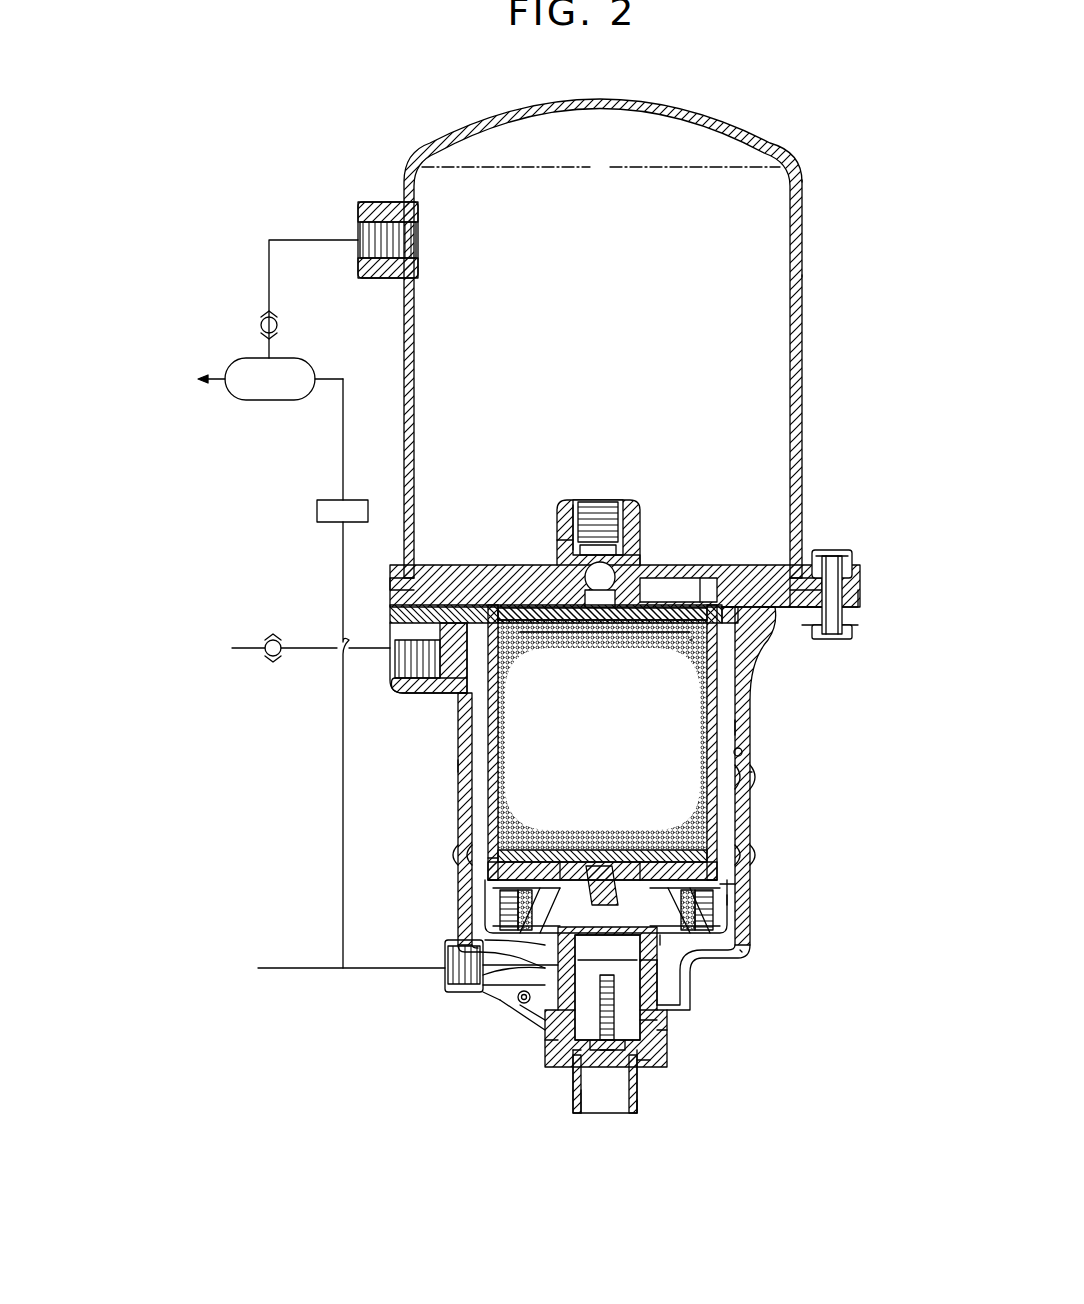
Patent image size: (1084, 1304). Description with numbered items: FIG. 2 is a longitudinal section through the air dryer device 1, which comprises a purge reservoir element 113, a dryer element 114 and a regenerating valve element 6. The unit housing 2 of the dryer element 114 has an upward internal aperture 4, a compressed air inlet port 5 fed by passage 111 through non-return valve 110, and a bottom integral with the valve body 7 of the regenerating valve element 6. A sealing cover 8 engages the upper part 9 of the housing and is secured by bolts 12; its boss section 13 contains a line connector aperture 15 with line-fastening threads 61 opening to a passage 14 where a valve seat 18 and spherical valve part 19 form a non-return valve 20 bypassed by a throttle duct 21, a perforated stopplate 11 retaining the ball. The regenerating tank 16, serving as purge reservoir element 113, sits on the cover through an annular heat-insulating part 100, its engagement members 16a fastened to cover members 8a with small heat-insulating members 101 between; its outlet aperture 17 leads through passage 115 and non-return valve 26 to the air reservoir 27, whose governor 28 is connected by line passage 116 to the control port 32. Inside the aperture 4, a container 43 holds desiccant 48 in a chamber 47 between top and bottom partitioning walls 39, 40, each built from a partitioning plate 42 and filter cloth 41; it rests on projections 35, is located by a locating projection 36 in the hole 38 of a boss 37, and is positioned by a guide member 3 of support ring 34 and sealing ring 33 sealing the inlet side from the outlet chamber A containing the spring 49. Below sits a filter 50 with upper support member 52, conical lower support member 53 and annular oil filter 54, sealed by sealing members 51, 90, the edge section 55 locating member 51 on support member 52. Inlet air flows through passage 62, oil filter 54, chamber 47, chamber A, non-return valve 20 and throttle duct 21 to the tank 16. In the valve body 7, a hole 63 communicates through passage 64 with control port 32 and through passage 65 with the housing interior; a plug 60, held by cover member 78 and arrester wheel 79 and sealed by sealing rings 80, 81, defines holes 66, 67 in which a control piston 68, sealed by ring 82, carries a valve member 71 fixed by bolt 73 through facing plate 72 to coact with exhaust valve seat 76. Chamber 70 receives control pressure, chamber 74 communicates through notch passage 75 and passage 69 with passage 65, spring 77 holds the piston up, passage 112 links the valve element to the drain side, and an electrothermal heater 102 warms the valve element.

The air dryer device 1 is at (830, 136).
The unit housing 2 is at (750, 798).
The guide member 3 is at (723, 630).
The internal aperture 4 is at (743, 754).
The compressed air inlet port 5 is at (392, 640).
The regenerating valve element 6 is at (560, 1042).
The valve body 7 is at (700, 1008).
The sealing cover 8 is at (762, 565).
The protruding engagement member 8a is at (858, 607).
The upper part 9 is at (800, 622).
The stopplate 11 is at (632, 562).
The bolt 12 is at (832, 630).
The boss section 13 is at (640, 515).
The passage 14 is at (565, 540).
The line connector aperture 15 is at (612, 500).
The regenerating tank 16 is at (803, 336).
The protruding engagement member 16a is at (855, 587).
The outlet aperture 17 is at (358, 218).
The valve seat 18 is at (665, 592).
The spherical valve part 19 is at (586, 572).
The non-return valve 20 is at (622, 548).
The throttle duct 21 is at (583, 625).
The non-return valve 26 is at (279, 326).
The air reservoir 27 is at (248, 358).
The governor 28 is at (322, 500).
The control port 32 is at (445, 966).
The sealing ring 33 is at (722, 606).
The support ring 34 is at (748, 650).
The projections 35 is at (717, 880).
The locating projection 36 is at (592, 860).
The boss 37 is at (572, 870).
The hole 38 is at (633, 852).
The top partitioning wall 39 is at (612, 620).
The bottom partitioning wall 40 is at (496, 858).
The filter cloth 41 is at (470, 692).
The partitioning plate 42 is at (500, 602).
The container 43 is at (722, 728).
The chamber 47 is at (589, 757).
The desiccant 48 is at (675, 644).
The spring 49 is at (622, 634).
The filter 50 is at (724, 910).
The sealing member 51 is at (737, 886).
The upper annular support member 52 is at (728, 896).
The conically shaped lower support member 53 is at (540, 906).
The annular oil filter 54 is at (724, 926).
The edge section 55 is at (548, 892).
The plug 60 is at (535, 1012).
The line-fastening threads 61 is at (580, 500).
The passage 62 is at (460, 766).
The hole 63 is at (692, 990).
The passage 64 is at (480, 990).
The passage 65 is at (745, 955).
The hole 66 is at (500, 952).
The hole 67 is at (580, 1092).
The control piston 68 is at (535, 962).
The passage 69 is at (662, 1022).
The chamber 70 is at (615, 870).
The valve member 71 is at (670, 1032).
The facing plate 72 is at (606, 1108).
The bolt 73 is at (614, 1052).
The chamber 74 is at (718, 998).
The notch passage 75 is at (685, 1012).
The exhaust valve seat 76 is at (640, 1062).
The spring 77 is at (530, 1000).
The cover member 78 is at (640, 1100).
The arrester wheel 79 is at (583, 1092).
The sealing ring 80 is at (515, 940).
The sealing ring 81 is at (560, 1018).
The sealing ring 82 is at (578, 1052).
The sealing member 90 is at (672, 945).
The annular heat-insulating part 100 is at (803, 565).
The annular heat-insulating members 101 is at (852, 582).
The electrothermal heater 102 is at (527, 1005).
The non-return valve 110 is at (275, 640).
The passage 111 is at (250, 652).
The passage 112 is at (300, 970).
The purge reservoir element 113 is at (831, 277).
The dryer element 114 is at (822, 773).
The passage 115 is at (270, 290).
The line passage 116 is at (343, 432).
The outlet chamber A is at (702, 580).